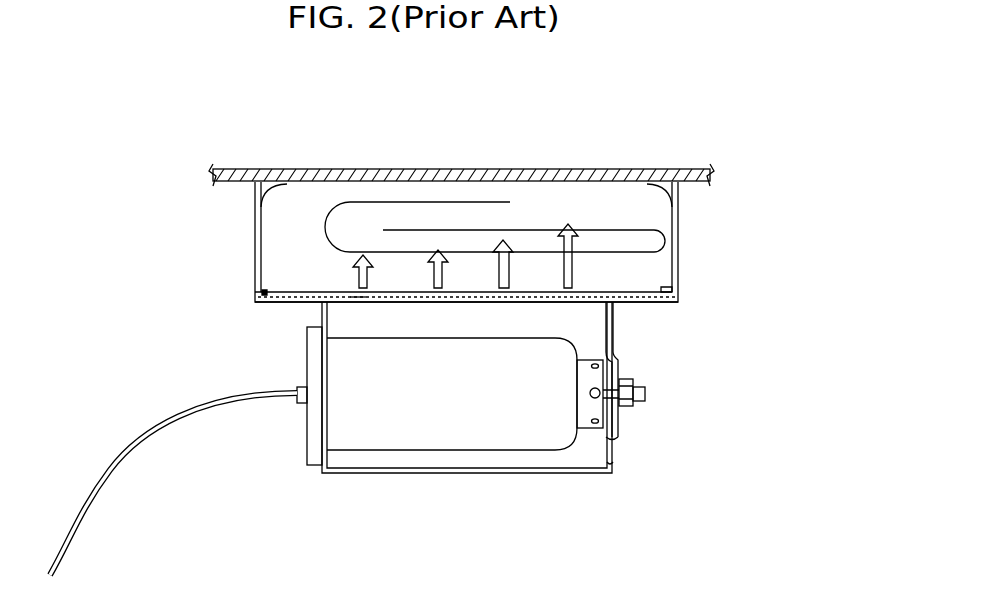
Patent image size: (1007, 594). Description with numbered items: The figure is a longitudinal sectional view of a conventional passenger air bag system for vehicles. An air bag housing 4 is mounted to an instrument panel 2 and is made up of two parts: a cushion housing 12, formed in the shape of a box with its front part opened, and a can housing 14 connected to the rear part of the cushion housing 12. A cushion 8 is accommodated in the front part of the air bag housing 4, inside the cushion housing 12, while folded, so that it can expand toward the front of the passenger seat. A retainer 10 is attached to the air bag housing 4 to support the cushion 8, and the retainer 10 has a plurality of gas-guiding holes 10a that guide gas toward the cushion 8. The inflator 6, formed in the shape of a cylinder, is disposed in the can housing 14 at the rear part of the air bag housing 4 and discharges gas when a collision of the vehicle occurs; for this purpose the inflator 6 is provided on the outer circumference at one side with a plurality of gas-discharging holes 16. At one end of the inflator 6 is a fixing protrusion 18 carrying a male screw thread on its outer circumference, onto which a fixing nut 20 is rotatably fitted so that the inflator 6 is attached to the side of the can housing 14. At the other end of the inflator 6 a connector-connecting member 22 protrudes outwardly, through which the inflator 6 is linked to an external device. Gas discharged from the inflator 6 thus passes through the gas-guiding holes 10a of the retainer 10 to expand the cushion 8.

The instrument panel 2 is at (231, 170).
The air bag housing 4 is at (760, 290).
The inflator 6 is at (560, 446).
The cushion 8 is at (270, 245).
The retainer 10 is at (263, 294).
The gas-guiding holes 10a is at (358, 299).
The cushion housing 12 is at (680, 259).
The can housing 14 is at (610, 330).
The gas-discharging holes 16 is at (613, 448).
The fixing protrusion 18 is at (643, 392).
The fixing nut 20 is at (626, 380).
The connector-connecting member 22 is at (303, 405).